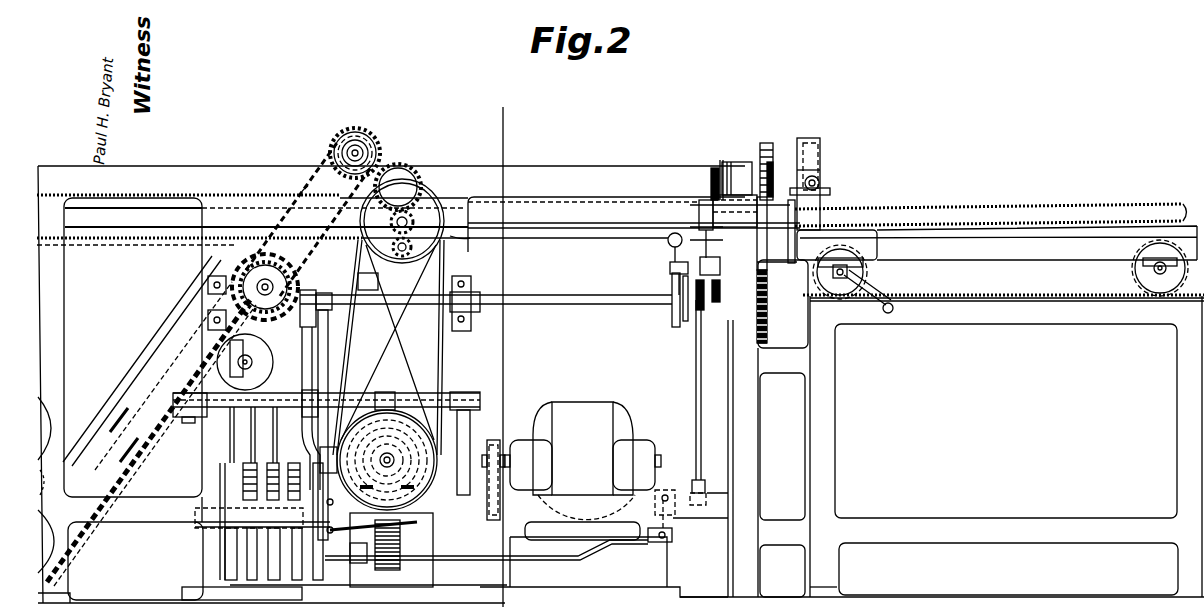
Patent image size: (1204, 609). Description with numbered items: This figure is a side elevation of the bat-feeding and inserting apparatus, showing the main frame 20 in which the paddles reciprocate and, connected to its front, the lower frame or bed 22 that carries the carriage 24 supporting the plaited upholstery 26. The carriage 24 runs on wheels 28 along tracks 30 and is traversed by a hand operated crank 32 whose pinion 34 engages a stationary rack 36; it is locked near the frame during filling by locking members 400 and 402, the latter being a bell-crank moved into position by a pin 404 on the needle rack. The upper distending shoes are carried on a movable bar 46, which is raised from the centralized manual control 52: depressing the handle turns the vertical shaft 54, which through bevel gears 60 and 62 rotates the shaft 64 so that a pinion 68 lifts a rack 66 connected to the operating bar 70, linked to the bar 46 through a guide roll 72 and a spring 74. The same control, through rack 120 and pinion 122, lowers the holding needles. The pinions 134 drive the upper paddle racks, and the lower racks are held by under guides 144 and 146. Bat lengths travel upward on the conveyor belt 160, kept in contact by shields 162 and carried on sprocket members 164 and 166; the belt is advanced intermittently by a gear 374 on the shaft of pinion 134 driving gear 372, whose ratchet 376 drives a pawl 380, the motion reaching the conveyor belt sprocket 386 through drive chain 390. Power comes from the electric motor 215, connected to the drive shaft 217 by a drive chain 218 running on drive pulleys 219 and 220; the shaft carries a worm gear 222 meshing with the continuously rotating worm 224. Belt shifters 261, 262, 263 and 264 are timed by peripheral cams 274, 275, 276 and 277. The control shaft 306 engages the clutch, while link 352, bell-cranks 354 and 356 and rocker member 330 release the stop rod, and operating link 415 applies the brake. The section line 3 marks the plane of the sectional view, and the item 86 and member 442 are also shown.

The section line 3— 3 is at (494, 111).
The main frame 20 is at (570, 162).
The lower frame or bed 22 is at (1195, 401).
The carriage 24 is at (1085, 250).
The plaited upholstery 26 is at (1183, 210).
The wheels 28 is at (868, 275).
The tracks 30 is at (1012, 296).
The hand operated crank 32 is at (885, 313).
The pinion 34 is at (805, 276).
The stationary rack 36 is at (905, 296).
The movable bar 46 is at (820, 150).
The centralized manual control 52 is at (675, 247).
The vertical shaft 54 is at (706, 204).
The bevel gear 60 is at (714, 176).
The bevel gear 62 is at (735, 180).
The shaft 64 is at (760, 178).
The rack 66 is at (770, 172).
The pinion 68 is at (808, 180).
The operating bar 70 is at (820, 188).
The guide roll 72 is at (824, 176).
The spring 74 is at (825, 160).
The drive pulley 86 is at (434, 222).
The rack 120 is at (767, 330).
The pinion 122 is at (768, 310).
The pinions 134 is at (403, 183).
The under guide 144 is at (113, 246).
The under guide 146 is at (541, 242).
The conveyor belt 160 is at (151, 443).
The shields or guide tubes 162 is at (125, 377).
The sprocket member 164 is at (258, 262).
The sprocket member 166 is at (62, 552).
The electric motor 215 is at (578, 405).
The drive shaft 217 is at (486, 440).
The drive chain 218 is at (498, 440).
The drive pulley 219 is at (492, 440).
The drive pulley 220 is at (500, 506).
The worm gear 222 is at (400, 530).
The worm 224 is at (400, 548).
The sliding belt shifter 261 is at (400, 258).
The sliding belt shifter 262 is at (452, 286).
The sliding belt shifter 263 is at (446, 272).
The sliding belt shifter 264 is at (385, 325).
The peripheral cam 274 is at (232, 568).
The peripheral cam 275 is at (253, 580).
The peripheral cam 276 is at (277, 580).
The peripheral cam 277 is at (298, 580).
The control shaft 306 is at (562, 305).
The rocker member 330 is at (343, 580).
The link 352 is at (560, 560).
The bell-crank 354 is at (692, 482).
The second bell-crank 356 is at (400, 566).
The gear 372 is at (370, 128).
The second gear 374 is at (396, 163).
The ratchet 376 is at (375, 132).
The pawl 380 is at (352, 127).
The conveyor belt sprocket 386 is at (300, 268).
The drive chain 390 is at (306, 186).
The locking member 400 is at (858, 210).
The locking member 402 is at (775, 252).
The pin 404 is at (778, 206).
The operating link 415 is at (233, 453).
The cross bar 442 is at (317, 533).